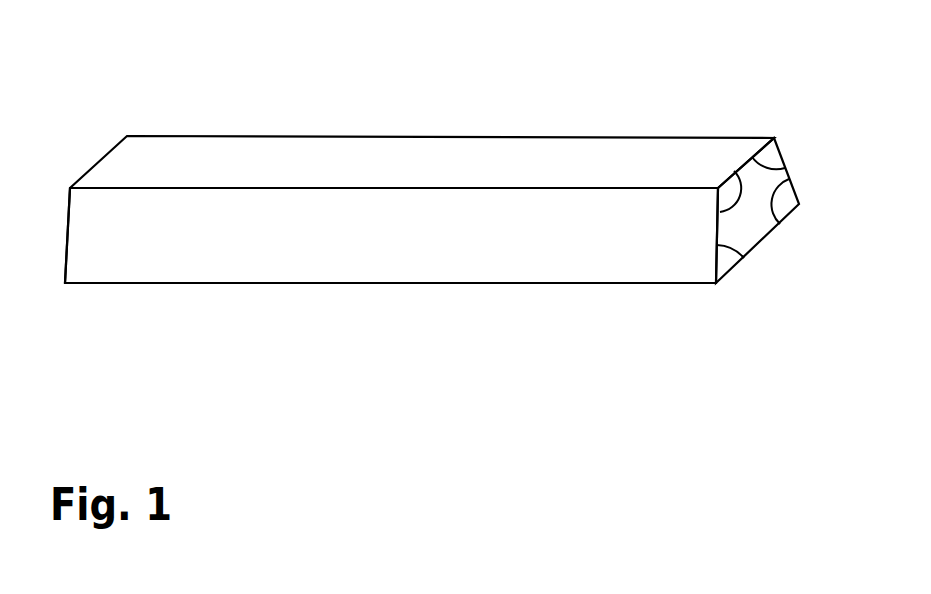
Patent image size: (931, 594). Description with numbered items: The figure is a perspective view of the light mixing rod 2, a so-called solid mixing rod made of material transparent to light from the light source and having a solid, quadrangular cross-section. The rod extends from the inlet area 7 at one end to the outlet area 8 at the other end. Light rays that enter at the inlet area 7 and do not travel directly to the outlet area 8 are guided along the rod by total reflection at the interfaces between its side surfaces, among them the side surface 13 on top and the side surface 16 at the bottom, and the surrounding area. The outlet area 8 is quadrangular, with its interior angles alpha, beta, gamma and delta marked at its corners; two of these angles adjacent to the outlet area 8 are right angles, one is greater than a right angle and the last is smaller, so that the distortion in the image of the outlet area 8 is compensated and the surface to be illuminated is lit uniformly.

The light mixing rod 2 is at (279, 306).
The inlet area 7 is at (64, 266).
The outlet area 8 is at (753, 228).
The side surface 13 is at (445, 152).
The side surface 16 is at (402, 272).